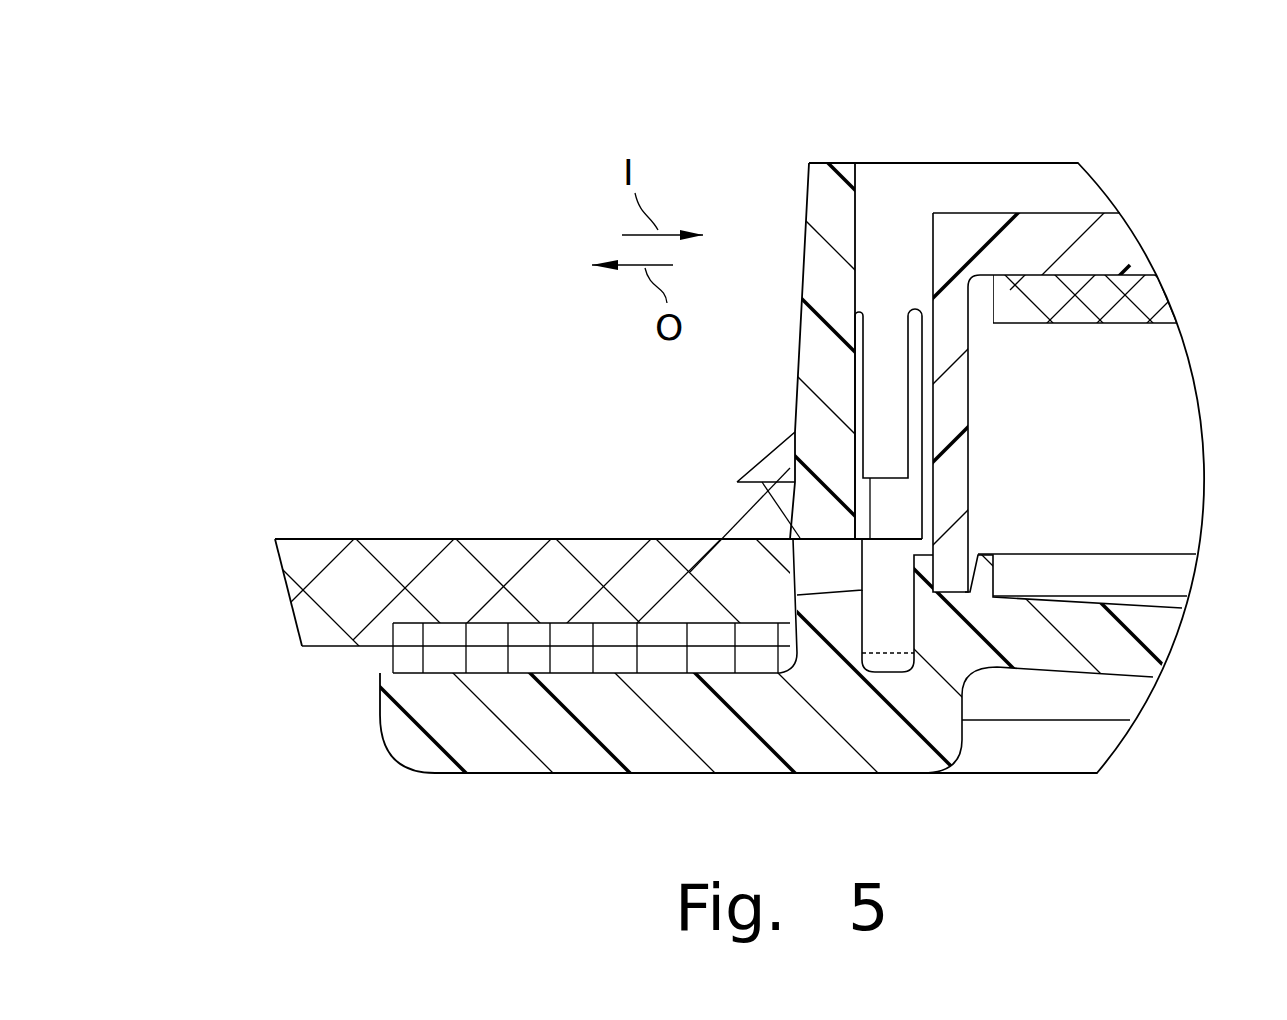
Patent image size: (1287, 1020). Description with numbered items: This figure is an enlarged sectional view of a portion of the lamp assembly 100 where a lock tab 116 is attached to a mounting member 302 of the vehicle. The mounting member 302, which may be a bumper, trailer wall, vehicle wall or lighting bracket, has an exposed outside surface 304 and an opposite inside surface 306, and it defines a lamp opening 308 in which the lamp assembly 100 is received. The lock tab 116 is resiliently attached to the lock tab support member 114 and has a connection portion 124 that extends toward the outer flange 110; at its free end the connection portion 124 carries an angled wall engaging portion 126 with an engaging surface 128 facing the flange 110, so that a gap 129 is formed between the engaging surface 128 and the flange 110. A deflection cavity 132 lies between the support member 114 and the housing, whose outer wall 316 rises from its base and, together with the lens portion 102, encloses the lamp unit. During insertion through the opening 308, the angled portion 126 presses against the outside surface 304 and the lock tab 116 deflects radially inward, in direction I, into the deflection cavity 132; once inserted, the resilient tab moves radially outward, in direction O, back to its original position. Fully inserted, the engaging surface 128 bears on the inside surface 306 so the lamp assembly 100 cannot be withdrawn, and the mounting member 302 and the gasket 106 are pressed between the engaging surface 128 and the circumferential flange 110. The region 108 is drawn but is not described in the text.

The lamp assembly 100 is at (1138, 162).
The lens portion 102 is at (738, 752).
The gasket 106 is at (400, 661).
The housing body 108 is at (1098, 648).
The outer flange 110 is at (495, 760).
The lock tab support member 114 is at (837, 613).
The lock tab 116 is at (750, 450).
The connection portion 124 is at (818, 348).
The angled wall engaging portion 126 is at (767, 515).
The engaging surface 128 is at (758, 545).
The gap 129 is at (848, 567).
The deflection cavity 132 is at (885, 222).
The mounting member 302 is at (305, 550).
The outside surface 304 is at (317, 645).
The inside surface 306 is at (489, 538).
The lamp opening 308 is at (825, 577).
The outer wall 316 is at (955, 400).